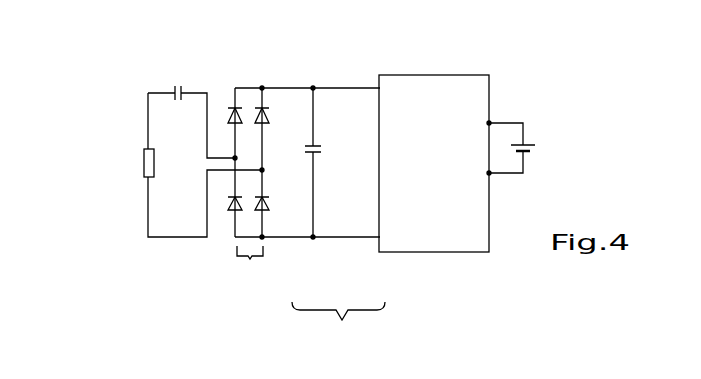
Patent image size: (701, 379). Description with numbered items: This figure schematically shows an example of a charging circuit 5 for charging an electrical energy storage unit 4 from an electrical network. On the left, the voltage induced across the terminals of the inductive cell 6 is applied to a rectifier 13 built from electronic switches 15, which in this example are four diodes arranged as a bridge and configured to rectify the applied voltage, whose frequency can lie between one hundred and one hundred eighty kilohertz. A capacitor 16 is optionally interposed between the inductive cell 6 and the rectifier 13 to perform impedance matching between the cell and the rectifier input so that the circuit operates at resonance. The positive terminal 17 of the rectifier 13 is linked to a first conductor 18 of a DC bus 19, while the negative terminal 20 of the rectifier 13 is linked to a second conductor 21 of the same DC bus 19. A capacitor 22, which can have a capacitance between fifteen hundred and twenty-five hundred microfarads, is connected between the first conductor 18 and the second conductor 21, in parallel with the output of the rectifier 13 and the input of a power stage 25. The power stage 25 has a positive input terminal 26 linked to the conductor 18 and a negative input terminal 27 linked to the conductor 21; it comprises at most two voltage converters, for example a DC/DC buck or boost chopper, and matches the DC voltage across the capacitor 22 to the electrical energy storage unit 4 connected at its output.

The electrical energy storage unit 4 is at (530, 145).
The charging circuit 5 is at (108, 120).
The inductive cell 6 is at (145, 157).
The rectifier 13 is at (250, 191).
The electronic switches 15 is at (228, 113).
The capacitor 16 is at (173, 90).
The positive terminal 17 is at (290, 88).
The first conductor 18 is at (357, 88).
The DC bus 19 is at (338, 326).
The negative terminal 20 is at (292, 238).
The second conductor 21 is at (342, 238).
The capacitor 22 is at (320, 146).
The power stage 25 is at (422, 78).
The positive input terminal 26 is at (368, 86).
The negative input terminal 27 is at (380, 252).